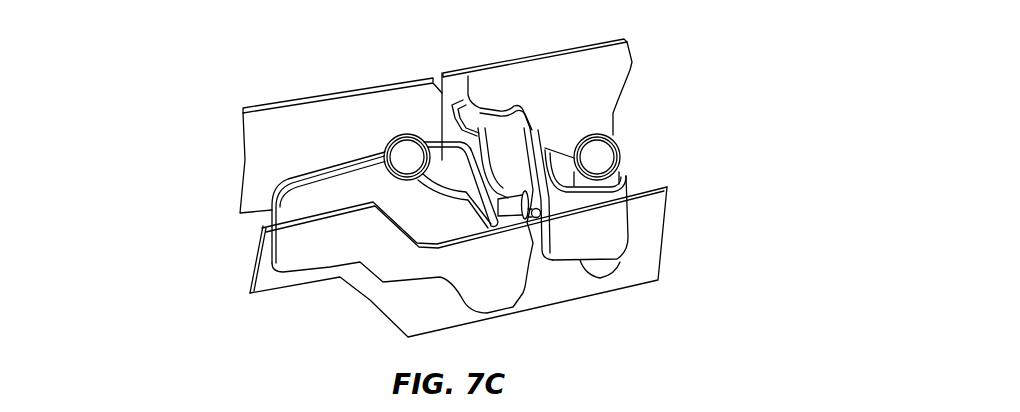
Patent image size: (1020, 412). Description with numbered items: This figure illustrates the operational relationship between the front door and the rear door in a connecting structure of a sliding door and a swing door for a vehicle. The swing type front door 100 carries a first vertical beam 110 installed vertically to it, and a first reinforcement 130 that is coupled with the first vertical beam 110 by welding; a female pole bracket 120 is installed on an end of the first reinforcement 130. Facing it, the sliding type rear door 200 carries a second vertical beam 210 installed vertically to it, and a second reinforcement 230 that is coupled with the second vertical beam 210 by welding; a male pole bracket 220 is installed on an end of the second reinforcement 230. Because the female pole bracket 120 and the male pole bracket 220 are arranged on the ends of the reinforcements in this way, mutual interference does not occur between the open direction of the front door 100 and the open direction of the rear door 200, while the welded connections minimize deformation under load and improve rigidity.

The front door 100 is at (560, 53).
The first vertical beam 110 is at (400, 212).
The female pole bracket 120 is at (520, 133).
The first reinforcement 130 is at (328, 197).
The rear door 200 is at (350, 90).
The second vertical beam 210 is at (603, 218).
The male pole bracket 220 is at (470, 138).
The second reinforcement 230 is at (598, 248).